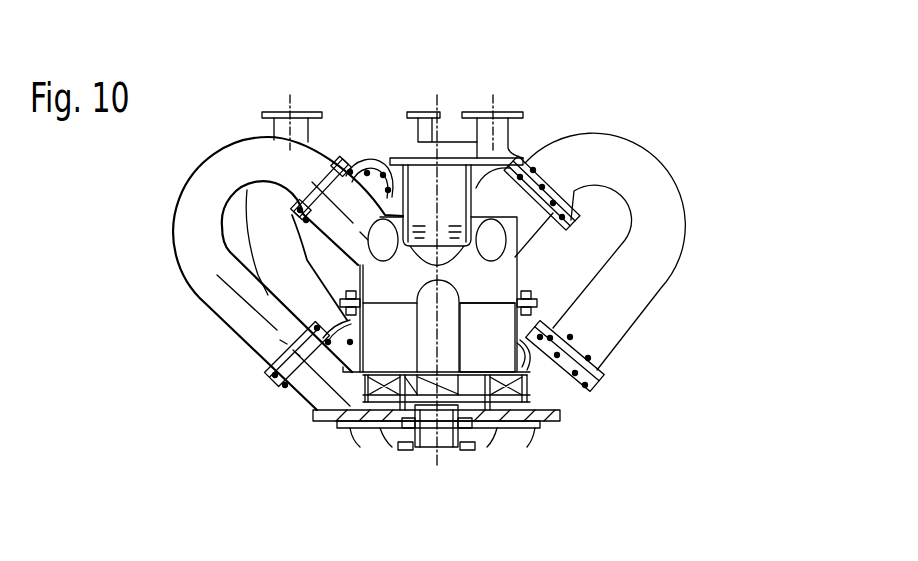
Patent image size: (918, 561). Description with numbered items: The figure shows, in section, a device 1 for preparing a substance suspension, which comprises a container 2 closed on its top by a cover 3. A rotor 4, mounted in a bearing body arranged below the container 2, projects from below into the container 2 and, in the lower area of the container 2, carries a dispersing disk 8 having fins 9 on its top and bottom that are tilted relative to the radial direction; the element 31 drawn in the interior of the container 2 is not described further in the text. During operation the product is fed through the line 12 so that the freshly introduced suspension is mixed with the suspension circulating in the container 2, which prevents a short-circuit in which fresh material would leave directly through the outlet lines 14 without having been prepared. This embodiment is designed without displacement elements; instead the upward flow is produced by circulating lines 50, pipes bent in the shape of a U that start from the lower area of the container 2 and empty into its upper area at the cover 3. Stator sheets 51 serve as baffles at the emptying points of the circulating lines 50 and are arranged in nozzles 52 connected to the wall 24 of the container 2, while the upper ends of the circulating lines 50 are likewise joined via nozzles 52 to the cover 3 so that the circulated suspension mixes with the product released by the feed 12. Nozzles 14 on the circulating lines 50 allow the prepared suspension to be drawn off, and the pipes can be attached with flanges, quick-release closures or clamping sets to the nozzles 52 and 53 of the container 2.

The device 1 is at (213, 355).
The container 2 is at (485, 348).
The cover 3 is at (505, 278).
The rotor 4 is at (427, 335).
The dispersing disk 8 is at (368, 398).
The fin 9 is at (502, 385).
The line 12 is at (447, 173).
The outlet lines 14 is at (298, 116).
The wall 24 is at (345, 318).
The impeller hub 31 is at (440, 256).
The circulating lines 50 is at (262, 222).
The stator sheets 51 is at (315, 403).
The nozzles 52 is at (318, 385).
The nozzles 53 is at (533, 218).